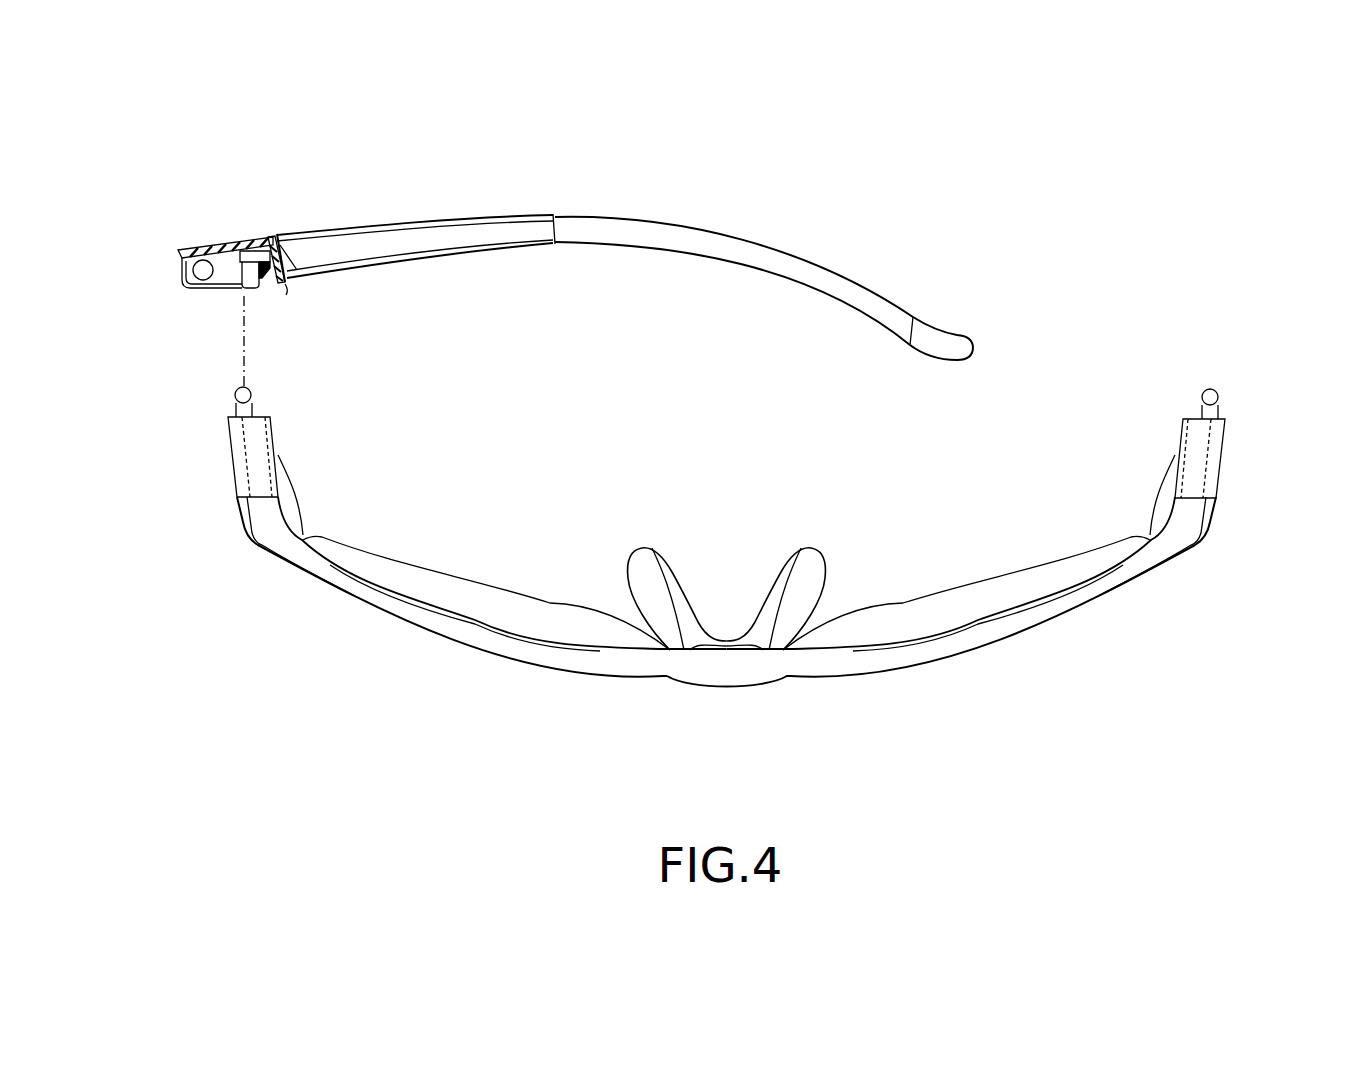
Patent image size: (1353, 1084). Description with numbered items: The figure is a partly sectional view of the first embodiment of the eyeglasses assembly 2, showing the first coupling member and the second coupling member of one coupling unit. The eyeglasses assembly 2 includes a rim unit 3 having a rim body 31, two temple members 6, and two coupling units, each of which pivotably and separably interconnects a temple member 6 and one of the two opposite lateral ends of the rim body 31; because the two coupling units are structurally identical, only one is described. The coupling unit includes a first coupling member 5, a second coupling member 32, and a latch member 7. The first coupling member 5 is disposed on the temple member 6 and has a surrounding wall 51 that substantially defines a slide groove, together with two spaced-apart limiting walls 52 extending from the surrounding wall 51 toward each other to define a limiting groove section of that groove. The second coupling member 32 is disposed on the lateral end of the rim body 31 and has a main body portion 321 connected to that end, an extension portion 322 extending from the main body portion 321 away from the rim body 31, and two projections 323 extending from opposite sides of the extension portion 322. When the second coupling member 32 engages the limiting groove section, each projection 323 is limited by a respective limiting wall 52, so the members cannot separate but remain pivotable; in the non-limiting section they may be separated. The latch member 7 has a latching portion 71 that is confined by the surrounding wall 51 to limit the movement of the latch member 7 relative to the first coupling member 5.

The eyeglasses assembly 2 is at (992, 225).
The rim unit 3 is at (433, 653).
The rim body 31 is at (890, 660).
The second coupling member 32 is at (205, 457).
The main body portion 321 is at (263, 438).
The extension portion 322 is at (233, 412).
The projections 323 is at (252, 389).
The first coupling member 5 is at (200, 237).
The surrounding wall 51 is at (275, 245).
The limiting walls 52 is at (190, 285).
The temple member 6 is at (780, 250).
The latch member 7 is at (223, 295).
The latching portion 71 is at (250, 290).